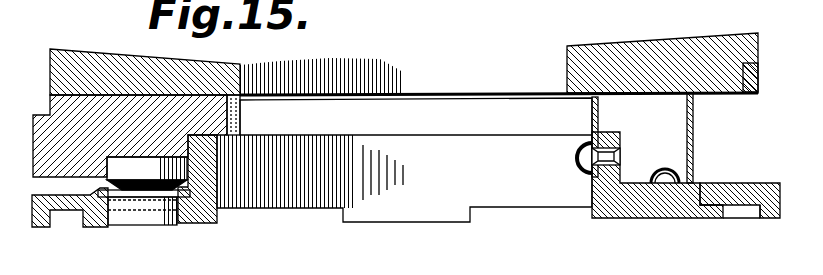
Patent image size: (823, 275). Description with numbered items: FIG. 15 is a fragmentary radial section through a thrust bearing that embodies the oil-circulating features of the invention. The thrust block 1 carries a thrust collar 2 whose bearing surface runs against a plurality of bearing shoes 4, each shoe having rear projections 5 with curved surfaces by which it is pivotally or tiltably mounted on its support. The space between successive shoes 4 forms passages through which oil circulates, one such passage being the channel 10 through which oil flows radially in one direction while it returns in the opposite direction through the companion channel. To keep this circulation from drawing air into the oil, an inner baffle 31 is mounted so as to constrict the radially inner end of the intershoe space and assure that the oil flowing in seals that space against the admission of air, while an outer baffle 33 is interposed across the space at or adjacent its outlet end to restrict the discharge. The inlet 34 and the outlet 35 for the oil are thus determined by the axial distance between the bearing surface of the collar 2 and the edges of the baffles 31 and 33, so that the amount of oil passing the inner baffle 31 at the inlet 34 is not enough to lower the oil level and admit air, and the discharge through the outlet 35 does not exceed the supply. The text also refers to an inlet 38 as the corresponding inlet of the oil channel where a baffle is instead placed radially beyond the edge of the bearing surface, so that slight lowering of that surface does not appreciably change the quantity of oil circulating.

The thrust block 1 is at (121, 161).
The thrust collar 2 is at (222, 75).
The bearing shoes 4 is at (53, 143).
The rear projections 5 is at (100, 191).
The channel 10 is at (747, 205).
The inner baffle 31 is at (587, 135).
The outer baffle 33 is at (696, 147).
The inlet 34 is at (588, 98).
The outlet 35 is at (697, 93).
The inlet 38 is at (645, 195).